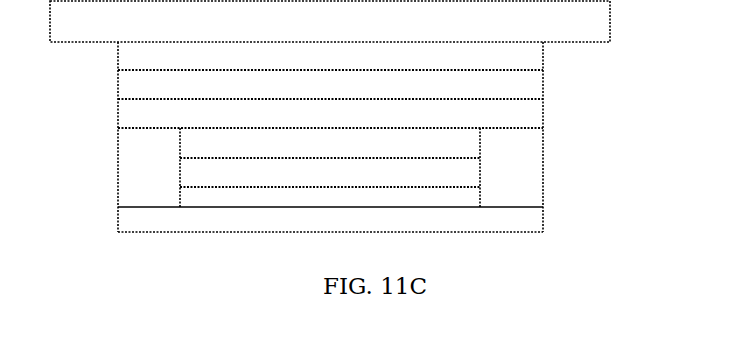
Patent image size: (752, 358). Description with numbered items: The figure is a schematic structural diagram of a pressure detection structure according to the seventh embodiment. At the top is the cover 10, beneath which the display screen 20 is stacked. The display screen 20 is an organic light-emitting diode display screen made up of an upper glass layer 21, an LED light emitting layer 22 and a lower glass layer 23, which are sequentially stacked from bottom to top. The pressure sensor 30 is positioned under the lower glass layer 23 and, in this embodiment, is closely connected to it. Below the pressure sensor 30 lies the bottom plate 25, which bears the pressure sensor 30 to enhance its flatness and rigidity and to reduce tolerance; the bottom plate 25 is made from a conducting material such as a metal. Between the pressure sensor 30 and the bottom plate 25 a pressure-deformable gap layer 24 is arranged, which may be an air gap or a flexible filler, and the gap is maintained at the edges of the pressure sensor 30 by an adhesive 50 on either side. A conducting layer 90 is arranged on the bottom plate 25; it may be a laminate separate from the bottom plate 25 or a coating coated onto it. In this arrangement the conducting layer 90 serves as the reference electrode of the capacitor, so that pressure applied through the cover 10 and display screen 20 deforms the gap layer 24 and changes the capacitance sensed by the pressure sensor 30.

The cover 10 is at (600, 22).
The display screen 20 is at (405, 137).
The upper glass layer 21 is at (530, 55).
The LED light emitting layer 22 is at (532, 88).
The lower glass layer 23 is at (530, 113).
The gap layer 24 is at (187, 173).
The bottom plate 25 is at (520, 222).
The pressure sensor 30 is at (466, 146).
The adhesive 50 is at (147, 143).
The conducting layer 90 is at (197, 196).